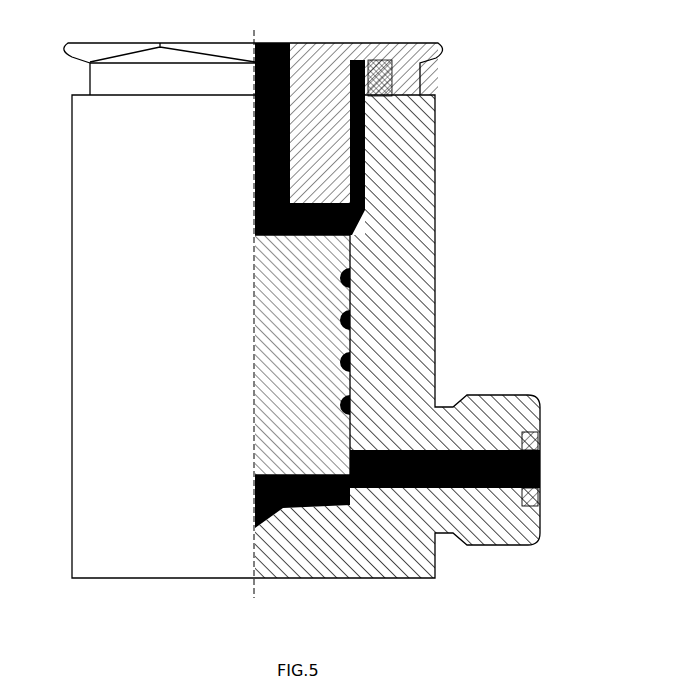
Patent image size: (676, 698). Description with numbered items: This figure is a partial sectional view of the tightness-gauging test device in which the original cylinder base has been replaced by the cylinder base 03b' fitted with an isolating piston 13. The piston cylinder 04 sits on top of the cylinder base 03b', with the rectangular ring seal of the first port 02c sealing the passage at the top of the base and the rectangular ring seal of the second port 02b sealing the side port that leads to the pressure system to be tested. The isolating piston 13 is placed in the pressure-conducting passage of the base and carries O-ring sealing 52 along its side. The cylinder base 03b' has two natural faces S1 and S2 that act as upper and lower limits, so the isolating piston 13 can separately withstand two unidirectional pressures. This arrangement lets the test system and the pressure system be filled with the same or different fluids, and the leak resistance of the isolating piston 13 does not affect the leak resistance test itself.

The piston cylinder 04 is at (418, 78).
The rectangular ring seal of first port 02c is at (421, 100).
The cylinder base 03b' is at (458, 353).
The isolating piston 13 is at (255, 405).
The O-ring sealing 52 is at (350, 320).
The natural face S1 is at (255, 213).
The natural face S2 is at (255, 495).
The rectangular ring seal of second port 02b is at (540, 440).